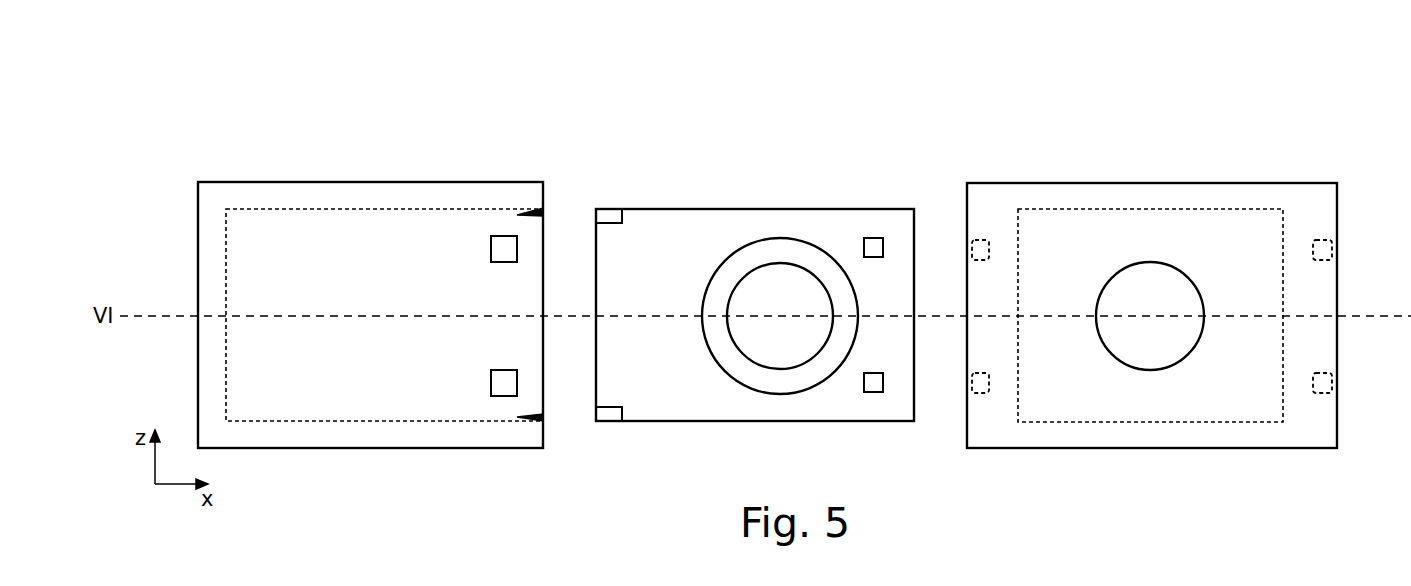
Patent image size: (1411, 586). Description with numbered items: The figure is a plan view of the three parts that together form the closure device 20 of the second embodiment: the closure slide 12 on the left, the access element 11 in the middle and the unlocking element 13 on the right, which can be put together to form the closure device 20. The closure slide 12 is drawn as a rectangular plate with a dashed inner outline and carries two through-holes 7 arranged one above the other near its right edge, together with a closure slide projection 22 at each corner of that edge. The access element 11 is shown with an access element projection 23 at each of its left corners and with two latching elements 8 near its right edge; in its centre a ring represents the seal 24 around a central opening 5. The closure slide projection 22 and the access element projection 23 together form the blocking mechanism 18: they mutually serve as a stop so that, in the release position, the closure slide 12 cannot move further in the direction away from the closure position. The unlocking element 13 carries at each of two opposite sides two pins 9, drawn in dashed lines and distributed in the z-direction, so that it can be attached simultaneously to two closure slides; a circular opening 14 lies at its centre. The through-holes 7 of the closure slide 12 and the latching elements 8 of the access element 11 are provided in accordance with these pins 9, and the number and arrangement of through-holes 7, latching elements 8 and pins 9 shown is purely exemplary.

The closure device 20 is at (338, 88).
The closure slide 12 is at (198, 207).
The through-holes 7 is at (505, 250).
The blocking mechanism 18 is at (591, 323).
The closure slide projection 22 is at (520, 210).
The access element projection 23 is at (608, 215).
The access element 11 is at (720, 209).
The seal 24 is at (775, 250).
The laser / lens 5 is at (782, 283).
The latching elements 8 is at (873, 248).
The unlocking element 13 is at (1010, 183).
The detector opening 14 is at (1168, 295).
The pins 9 is at (978, 248).